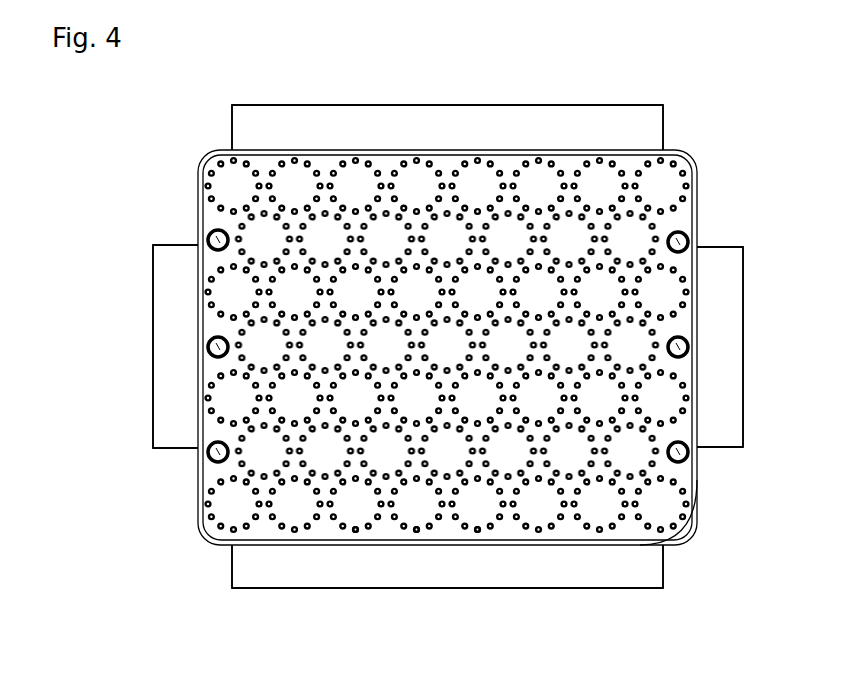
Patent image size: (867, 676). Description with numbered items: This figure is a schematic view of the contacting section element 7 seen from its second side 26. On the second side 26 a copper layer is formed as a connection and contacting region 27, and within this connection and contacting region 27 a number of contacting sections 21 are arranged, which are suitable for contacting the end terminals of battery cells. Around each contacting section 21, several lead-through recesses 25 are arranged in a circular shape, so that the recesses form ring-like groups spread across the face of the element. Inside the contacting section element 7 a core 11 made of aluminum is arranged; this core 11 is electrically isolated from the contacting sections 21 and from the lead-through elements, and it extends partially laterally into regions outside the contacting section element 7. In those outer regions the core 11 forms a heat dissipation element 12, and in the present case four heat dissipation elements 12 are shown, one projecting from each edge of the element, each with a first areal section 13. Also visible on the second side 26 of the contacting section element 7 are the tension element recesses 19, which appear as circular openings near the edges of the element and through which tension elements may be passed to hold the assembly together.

The contacting section element 7 is at (710, 140).
The core 11 is at (383, 122).
The heat dissipation element 12 is at (437, 122).
The first areal section 13 is at (482, 122).
The tension element recess 19 is at (207, 223).
The contacting section 21 is at (355, 515).
The lead-through recess 25 is at (415, 532).
The second side 26 is at (698, 210).
The connection and contacting region 27 is at (698, 482).